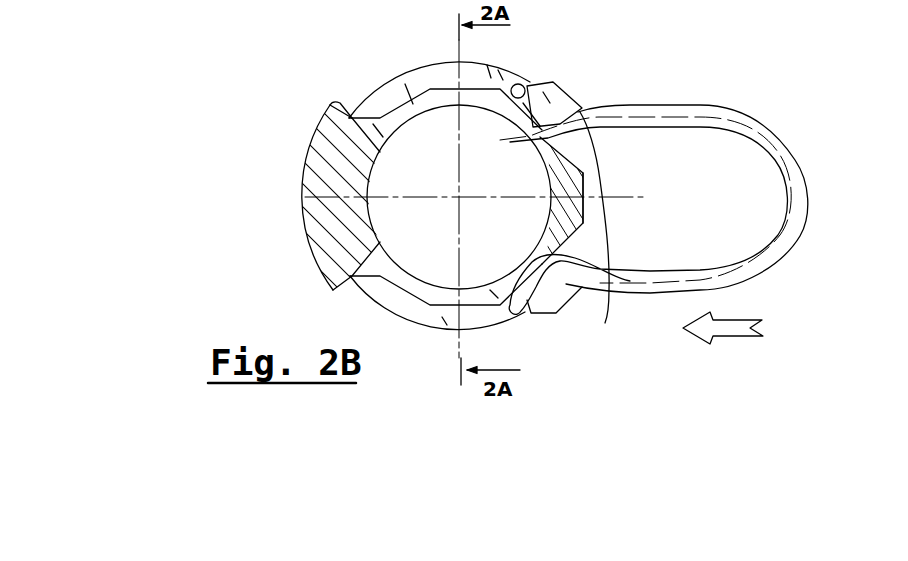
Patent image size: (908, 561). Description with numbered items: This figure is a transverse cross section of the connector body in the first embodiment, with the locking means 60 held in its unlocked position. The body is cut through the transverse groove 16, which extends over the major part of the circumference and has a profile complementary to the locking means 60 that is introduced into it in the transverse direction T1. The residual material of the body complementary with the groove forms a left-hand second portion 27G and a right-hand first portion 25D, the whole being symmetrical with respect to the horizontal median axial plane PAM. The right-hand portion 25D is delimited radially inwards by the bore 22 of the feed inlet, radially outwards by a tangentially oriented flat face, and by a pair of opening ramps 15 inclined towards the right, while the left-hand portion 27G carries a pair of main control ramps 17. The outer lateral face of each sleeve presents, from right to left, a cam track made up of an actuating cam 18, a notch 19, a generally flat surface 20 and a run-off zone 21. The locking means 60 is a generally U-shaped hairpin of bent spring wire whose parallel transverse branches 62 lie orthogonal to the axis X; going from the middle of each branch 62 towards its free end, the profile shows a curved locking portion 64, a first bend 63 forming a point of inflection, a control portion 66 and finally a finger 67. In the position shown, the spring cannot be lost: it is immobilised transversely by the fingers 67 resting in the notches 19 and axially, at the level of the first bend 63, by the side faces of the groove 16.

The inclined ramps 15 is at (497, 229).
The transverse groove 16 is at (436, 313).
The inclined ramps 17 is at (346, 96).
The actuating cam 18 is at (574, 84).
The notch 19 is at (495, 84).
The flat surface 20 is at (436, 82).
The run-off zone 21 is at (379, 103).
The bore 22 is at (392, 186).
The first portion 25D is at (570, 215).
The second portion 27G is at (326, 218).
The locking means 60 is at (818, 187).
The transverse branches 62 is at (716, 118).
The first bend 63 is at (533, 138).
The first portion 64 is at (612, 107).
The second portion 66 is at (521, 110).
The finger 67 is at (525, 84).
The median axial plane PAM is at (633, 197).
The axis X is at (457, 200).
The transverse direction T1 is at (723, 341).